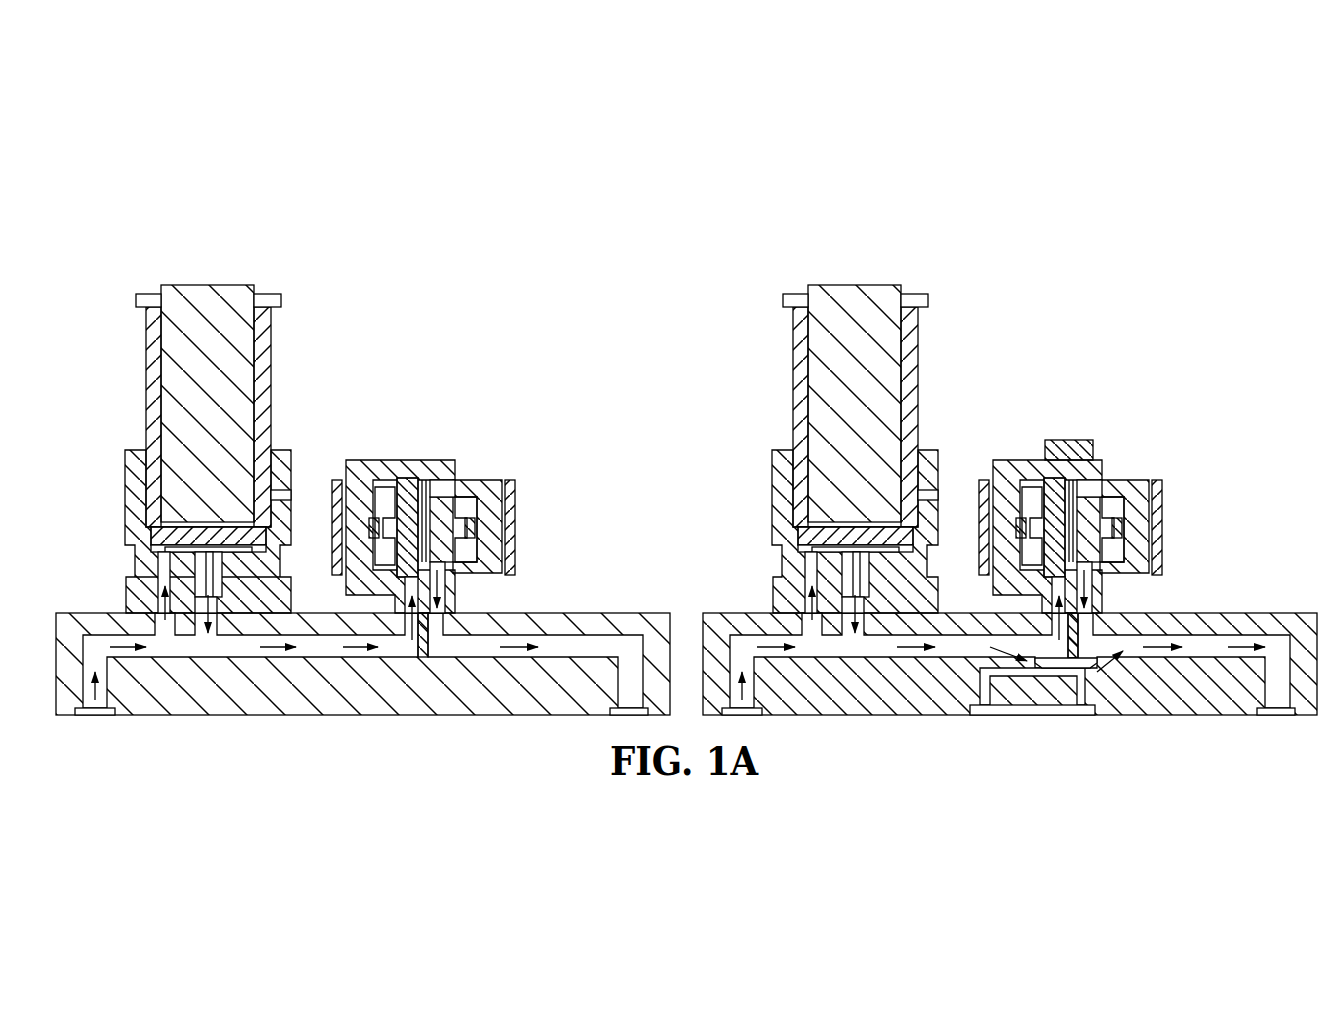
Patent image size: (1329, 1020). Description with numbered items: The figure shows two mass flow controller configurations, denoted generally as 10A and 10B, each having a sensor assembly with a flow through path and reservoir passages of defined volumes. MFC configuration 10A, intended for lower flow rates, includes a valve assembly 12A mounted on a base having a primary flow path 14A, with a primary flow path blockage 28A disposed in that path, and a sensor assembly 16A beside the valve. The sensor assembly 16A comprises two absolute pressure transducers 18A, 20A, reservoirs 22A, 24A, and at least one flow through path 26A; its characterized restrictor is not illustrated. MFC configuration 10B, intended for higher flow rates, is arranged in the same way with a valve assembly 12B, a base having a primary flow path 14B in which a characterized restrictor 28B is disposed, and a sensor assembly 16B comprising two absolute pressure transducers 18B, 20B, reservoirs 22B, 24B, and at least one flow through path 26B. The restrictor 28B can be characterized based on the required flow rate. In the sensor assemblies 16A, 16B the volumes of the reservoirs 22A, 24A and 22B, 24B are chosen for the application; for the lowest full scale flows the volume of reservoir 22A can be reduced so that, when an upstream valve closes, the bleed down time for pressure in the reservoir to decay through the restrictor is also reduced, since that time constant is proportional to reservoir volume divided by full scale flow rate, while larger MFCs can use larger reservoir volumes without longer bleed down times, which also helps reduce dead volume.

The MFC configuration 10A is at (150, 236).
The MFC configuration 10B is at (1008, 492).
The valve assembly 12A is at (138, 367).
The valve assembly 12B is at (819, 459).
The primary flow path 14A is at (318, 654).
The primary flow path 14B is at (1010, 693).
The sensor assembly 16A is at (445, 500).
The sensor assembly 16B is at (1097, 500).
The absolute pressure transducer 18A is at (352, 475).
The absolute pressure transducer 18B is at (1023, 486).
The absolute pressure transducer 20A is at (490, 578).
The absolute pressure transducer 20B is at (1175, 540).
The reservoir 22A is at (358, 493).
The reservoir 22B is at (1012, 484).
The reservoir 24A is at (443, 540).
The reservoir 24B is at (1168, 529).
The flow through path 26A is at (437, 490).
The flow through path 26B is at (1071, 479).
The primary flow path blockage 28A is at (428, 647).
The characterized restrictor 28B is at (1070, 695).